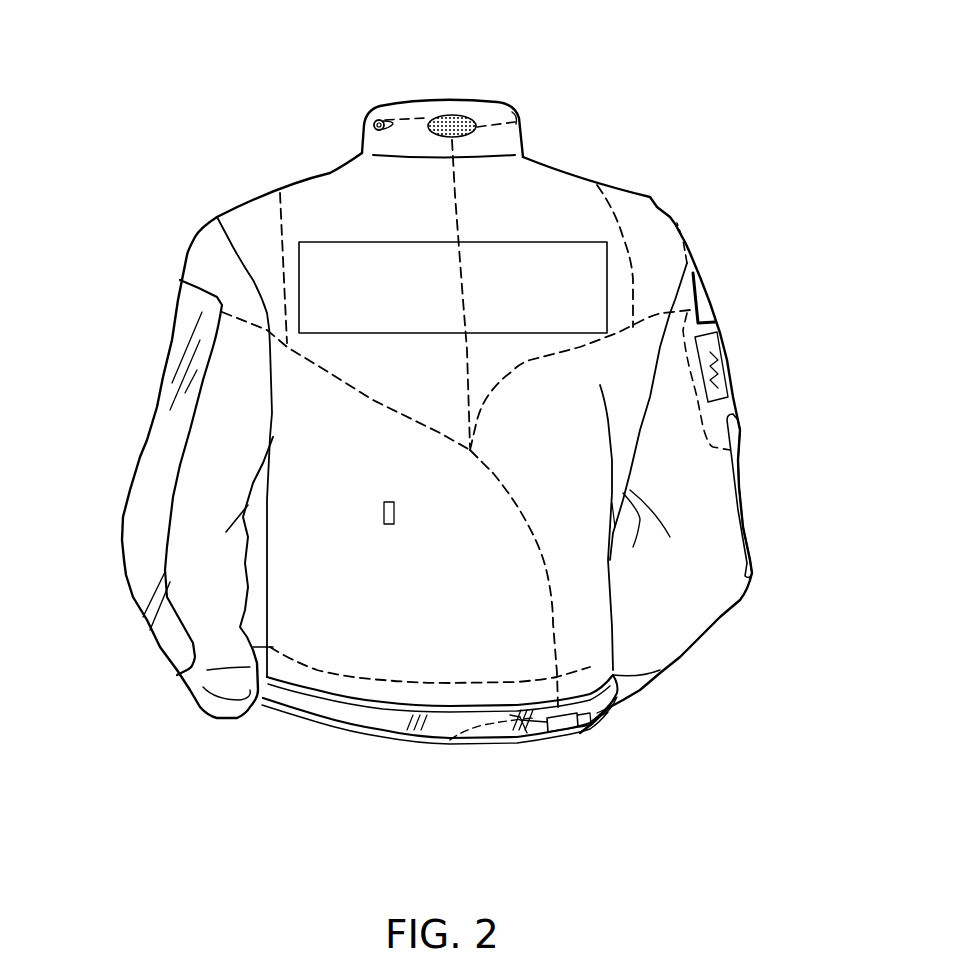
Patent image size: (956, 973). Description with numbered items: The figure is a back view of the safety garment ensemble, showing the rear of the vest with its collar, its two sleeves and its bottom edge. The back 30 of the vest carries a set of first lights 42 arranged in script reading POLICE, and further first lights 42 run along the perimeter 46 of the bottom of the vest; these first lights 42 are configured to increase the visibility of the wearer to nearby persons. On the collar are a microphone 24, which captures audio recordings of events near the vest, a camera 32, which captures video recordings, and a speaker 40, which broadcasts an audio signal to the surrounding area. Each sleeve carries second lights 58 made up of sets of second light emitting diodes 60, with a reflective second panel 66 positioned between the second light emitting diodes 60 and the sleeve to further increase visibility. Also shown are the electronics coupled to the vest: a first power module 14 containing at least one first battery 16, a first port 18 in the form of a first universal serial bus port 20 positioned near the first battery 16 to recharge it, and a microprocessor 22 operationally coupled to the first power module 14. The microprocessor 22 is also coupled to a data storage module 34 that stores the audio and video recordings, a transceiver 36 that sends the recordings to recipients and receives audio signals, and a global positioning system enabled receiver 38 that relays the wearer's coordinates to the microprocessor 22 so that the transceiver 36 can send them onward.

The first power module 14 is at (637, 693).
The first battery 16 is at (603, 715).
The first port 18 is at (527, 727).
The first universal serial bus port 20 is at (566, 732).
The microprocessor 22 is at (597, 713).
The microphones 24 is at (448, 117).
The back 30 is at (420, 531).
The cameras 32 is at (377, 122).
The data storage module 34 is at (443, 747).
The transceiver 36 is at (527, 737).
The receiver 38 is at (527, 733).
The speakers 40 is at (457, 118).
The first lights 42 is at (522, 277).
The perimeter 46 is at (377, 743).
The second lights 58 is at (748, 483).
The second light emitting diodes 60 is at (137, 484).
The second panels 66 is at (605, 272).